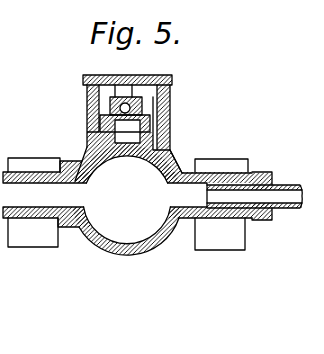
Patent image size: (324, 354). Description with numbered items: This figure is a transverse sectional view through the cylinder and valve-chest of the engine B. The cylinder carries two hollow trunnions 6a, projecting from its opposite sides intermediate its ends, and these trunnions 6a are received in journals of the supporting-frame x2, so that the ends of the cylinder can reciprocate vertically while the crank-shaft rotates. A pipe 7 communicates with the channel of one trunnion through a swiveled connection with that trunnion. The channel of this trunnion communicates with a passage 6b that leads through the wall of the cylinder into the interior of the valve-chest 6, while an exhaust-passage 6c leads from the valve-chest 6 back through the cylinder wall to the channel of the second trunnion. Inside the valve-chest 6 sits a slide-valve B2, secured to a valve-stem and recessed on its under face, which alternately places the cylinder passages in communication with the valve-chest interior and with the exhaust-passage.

The valve-chest 6 is at (127, 103).
The trunnions 6a is at (28, 175).
The passage 6b is at (170, 160).
The exhaust-passage 6c is at (82, 152).
The engine B is at (163, 176).
The slide-valve B2 is at (138, 100).
The supporting-frame x2 is at (43, 240).
The pipe 7 is at (254, 211).